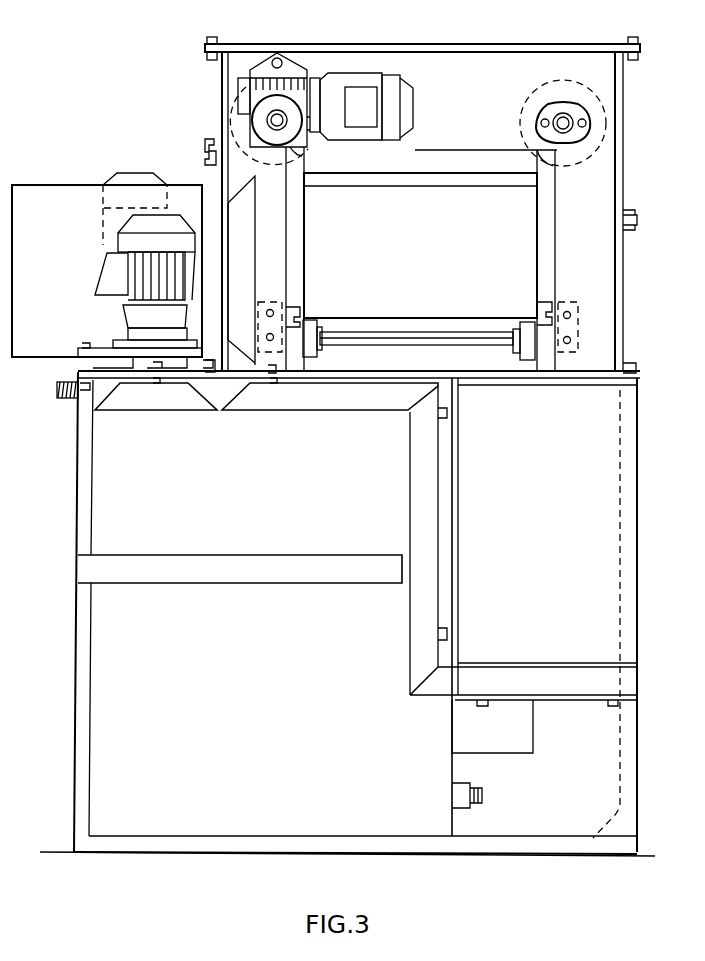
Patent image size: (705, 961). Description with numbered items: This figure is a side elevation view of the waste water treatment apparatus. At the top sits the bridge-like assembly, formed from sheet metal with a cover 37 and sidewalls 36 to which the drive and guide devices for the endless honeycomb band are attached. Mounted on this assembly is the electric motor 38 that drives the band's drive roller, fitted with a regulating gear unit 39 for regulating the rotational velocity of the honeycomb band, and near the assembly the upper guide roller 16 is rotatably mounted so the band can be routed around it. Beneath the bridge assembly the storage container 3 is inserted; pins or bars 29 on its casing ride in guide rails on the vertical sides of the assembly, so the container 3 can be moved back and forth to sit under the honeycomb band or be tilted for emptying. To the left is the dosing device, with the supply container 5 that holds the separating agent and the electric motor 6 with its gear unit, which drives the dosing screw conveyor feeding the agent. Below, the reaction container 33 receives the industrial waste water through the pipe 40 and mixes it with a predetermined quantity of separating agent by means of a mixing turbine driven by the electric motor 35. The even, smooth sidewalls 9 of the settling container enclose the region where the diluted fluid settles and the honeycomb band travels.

The storage container 3 is at (426, 254).
The supply container 5 is at (74, 259).
The electric motor 6 is at (135, 180).
The sidewalls 9 is at (620, 522).
The upper guide roller 16 is at (533, 120).
The pins or bars 29 is at (362, 334).
The reaction container 33 is at (272, 503).
The electric motor 35 is at (133, 308).
The sidewalls 36 is at (222, 97).
The cover 37 is at (443, 62).
The electric motor 38 is at (400, 96).
The regulating gear unit 39 is at (256, 140).
The pipe 40 is at (60, 398).